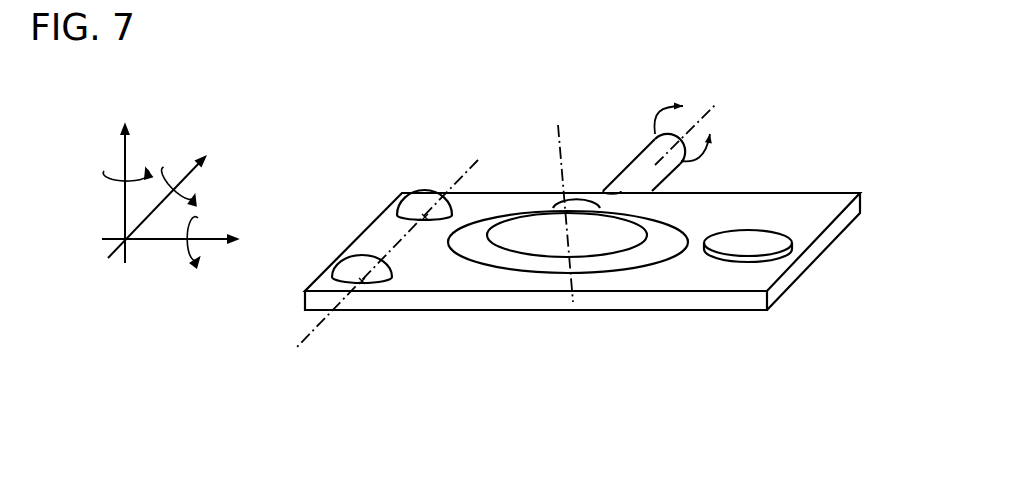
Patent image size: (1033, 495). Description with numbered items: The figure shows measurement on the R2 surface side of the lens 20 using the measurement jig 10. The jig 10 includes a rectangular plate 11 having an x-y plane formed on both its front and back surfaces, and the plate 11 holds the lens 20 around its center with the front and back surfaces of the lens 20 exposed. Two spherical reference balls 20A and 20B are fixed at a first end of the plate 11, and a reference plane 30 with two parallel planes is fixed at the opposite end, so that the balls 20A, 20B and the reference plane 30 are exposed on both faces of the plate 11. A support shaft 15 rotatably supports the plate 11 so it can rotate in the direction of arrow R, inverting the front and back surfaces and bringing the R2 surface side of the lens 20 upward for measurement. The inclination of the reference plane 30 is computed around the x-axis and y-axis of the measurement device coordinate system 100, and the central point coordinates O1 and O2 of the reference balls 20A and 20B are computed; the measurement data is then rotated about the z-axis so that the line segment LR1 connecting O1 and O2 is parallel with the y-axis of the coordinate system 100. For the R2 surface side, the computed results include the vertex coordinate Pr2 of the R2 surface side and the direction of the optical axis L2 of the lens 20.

The measurement jig 10 is at (797, 119).
The plate 11 is at (815, 203).
The support shaft 15 is at (637, 163).
The lens 20 is at (544, 204).
The reference ball 20A is at (354, 256).
The reference ball 20B is at (421, 189).
The reference plane 30 is at (746, 229).
The measurement device coordinate system 100 is at (172, 202).
The arrow R is at (685, 120).
The line segment LR1 is at (397, 241).
The optical axis L2 is at (560, 201).
The central point coordinate O1 is at (366, 283).
The central point coordinate O2 is at (428, 219).
The R2 surface side R2 is at (548, 238).
The vertex coordinate Pr2 is at (580, 200).